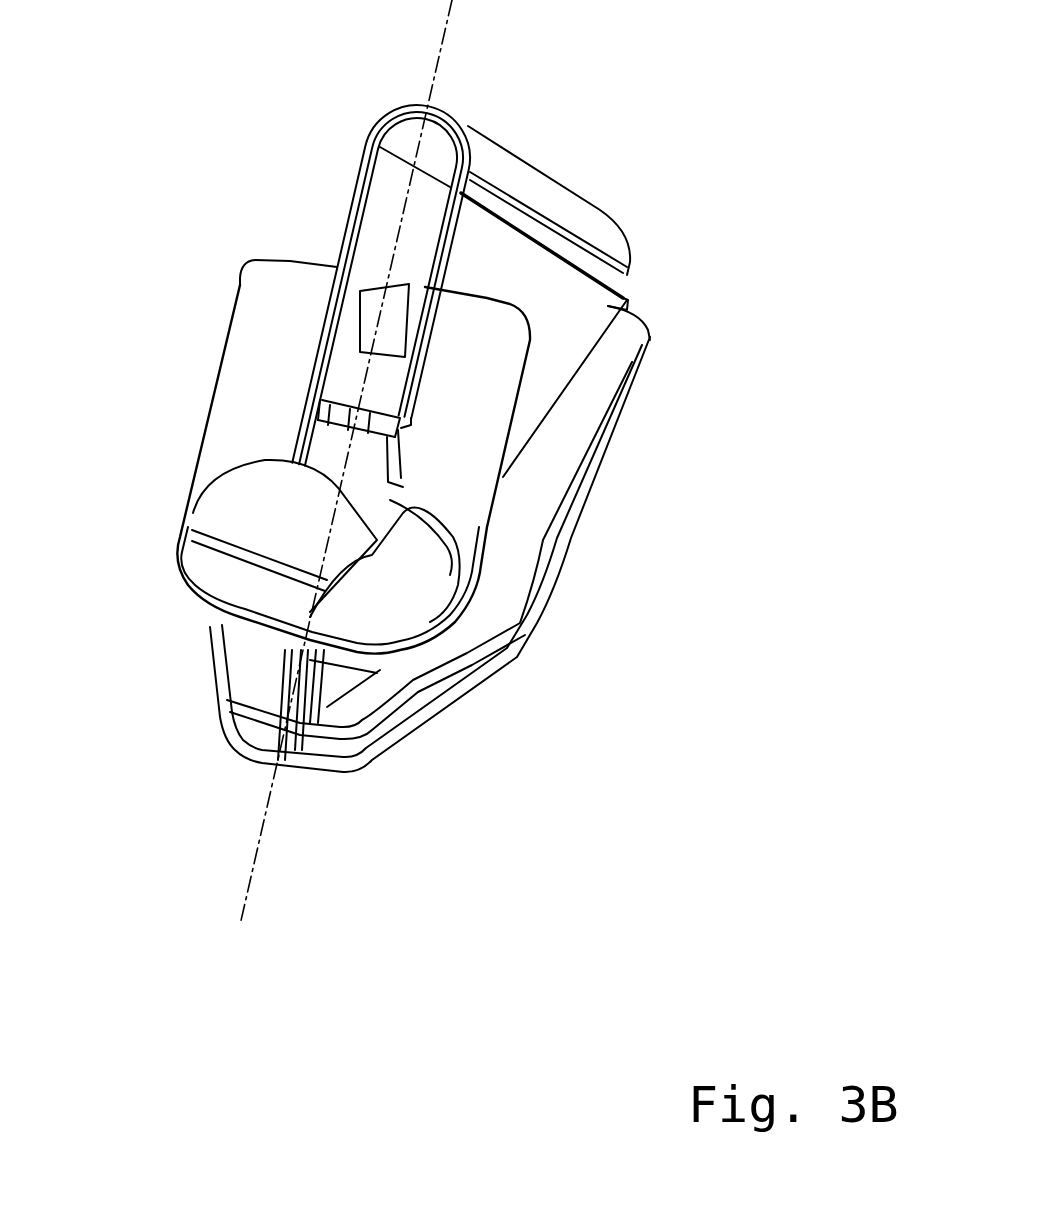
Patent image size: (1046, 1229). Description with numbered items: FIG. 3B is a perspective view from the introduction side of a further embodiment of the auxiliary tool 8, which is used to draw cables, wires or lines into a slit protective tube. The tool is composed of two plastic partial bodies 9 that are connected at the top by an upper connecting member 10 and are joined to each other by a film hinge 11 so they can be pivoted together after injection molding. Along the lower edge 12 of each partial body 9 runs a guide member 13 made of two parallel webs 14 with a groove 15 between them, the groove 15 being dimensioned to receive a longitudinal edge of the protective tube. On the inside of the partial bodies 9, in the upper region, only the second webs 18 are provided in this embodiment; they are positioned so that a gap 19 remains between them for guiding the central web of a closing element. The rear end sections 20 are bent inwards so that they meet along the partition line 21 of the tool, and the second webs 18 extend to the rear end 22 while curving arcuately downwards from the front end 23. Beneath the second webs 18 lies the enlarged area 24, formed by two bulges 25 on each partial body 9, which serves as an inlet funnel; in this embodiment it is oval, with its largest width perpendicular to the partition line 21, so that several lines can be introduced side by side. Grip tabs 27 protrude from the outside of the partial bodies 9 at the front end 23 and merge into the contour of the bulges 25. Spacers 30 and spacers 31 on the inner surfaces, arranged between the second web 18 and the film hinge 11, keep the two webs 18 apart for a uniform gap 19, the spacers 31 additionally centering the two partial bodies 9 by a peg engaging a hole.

The auxiliary tool 8 is at (540, 158).
The partial body 9 is at (353, 197).
The upper connecting member 10 is at (483, 143).
The film hinge 11 is at (368, 165).
The lower edge 12 is at (360, 683).
The guide member 13 is at (530, 598).
The web 14 is at (570, 500).
The groove 15 is at (607, 438).
The second web 18 is at (340, 410).
The gap 19 is at (340, 418).
The rear end section 20 is at (313, 777).
The partition line 21 is at (260, 848).
The rear end 22 is at (643, 317).
The front end 23 is at (253, 760).
The enlarged area 24 is at (227, 563).
The bulge 25 is at (192, 513).
The grip tab 27 is at (270, 293).
The spacer 30 is at (373, 497).
The spacer 31 is at (387, 300).